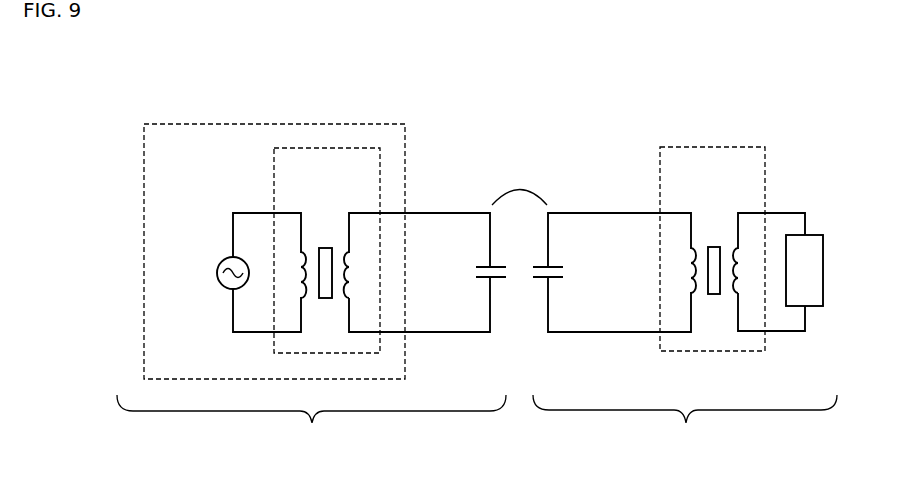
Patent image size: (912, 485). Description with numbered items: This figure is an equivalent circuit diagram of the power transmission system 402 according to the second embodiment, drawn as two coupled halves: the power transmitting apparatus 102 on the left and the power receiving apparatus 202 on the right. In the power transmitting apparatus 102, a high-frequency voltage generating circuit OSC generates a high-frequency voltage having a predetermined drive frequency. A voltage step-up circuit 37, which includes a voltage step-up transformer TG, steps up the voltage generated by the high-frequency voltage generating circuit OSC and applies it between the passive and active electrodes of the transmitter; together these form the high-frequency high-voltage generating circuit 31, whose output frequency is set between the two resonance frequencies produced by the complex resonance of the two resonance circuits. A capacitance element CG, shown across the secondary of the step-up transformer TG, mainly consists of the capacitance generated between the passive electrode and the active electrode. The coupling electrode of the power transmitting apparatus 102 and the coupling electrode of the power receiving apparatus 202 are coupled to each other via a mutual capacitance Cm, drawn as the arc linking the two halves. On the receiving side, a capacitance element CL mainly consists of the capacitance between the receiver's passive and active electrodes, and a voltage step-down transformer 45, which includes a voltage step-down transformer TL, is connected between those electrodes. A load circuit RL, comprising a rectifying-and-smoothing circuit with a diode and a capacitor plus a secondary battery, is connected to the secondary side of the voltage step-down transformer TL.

The power transmission system 402 is at (848, 45).
The high-frequency high-voltage generating circuit 31 is at (235, 123).
The voltage step-up circuit 37 is at (325, 147).
The voltage step-down transformer 45 is at (716, 145).
The power transmitting apparatus 102 is at (311, 427).
The power receiving apparatus 202 is at (685, 426).
The high-frequency voltage generating circuit OSC is at (236, 272).
The voltage step-up transformer TG is at (326, 236).
The capacitance element CG is at (425, 272).
The mutual capacitance Cm is at (519, 184).
The capacitance element CL is at (614, 272).
The voltage step-down transformer TL is at (714, 232).
The load circuit RL is at (796, 272).